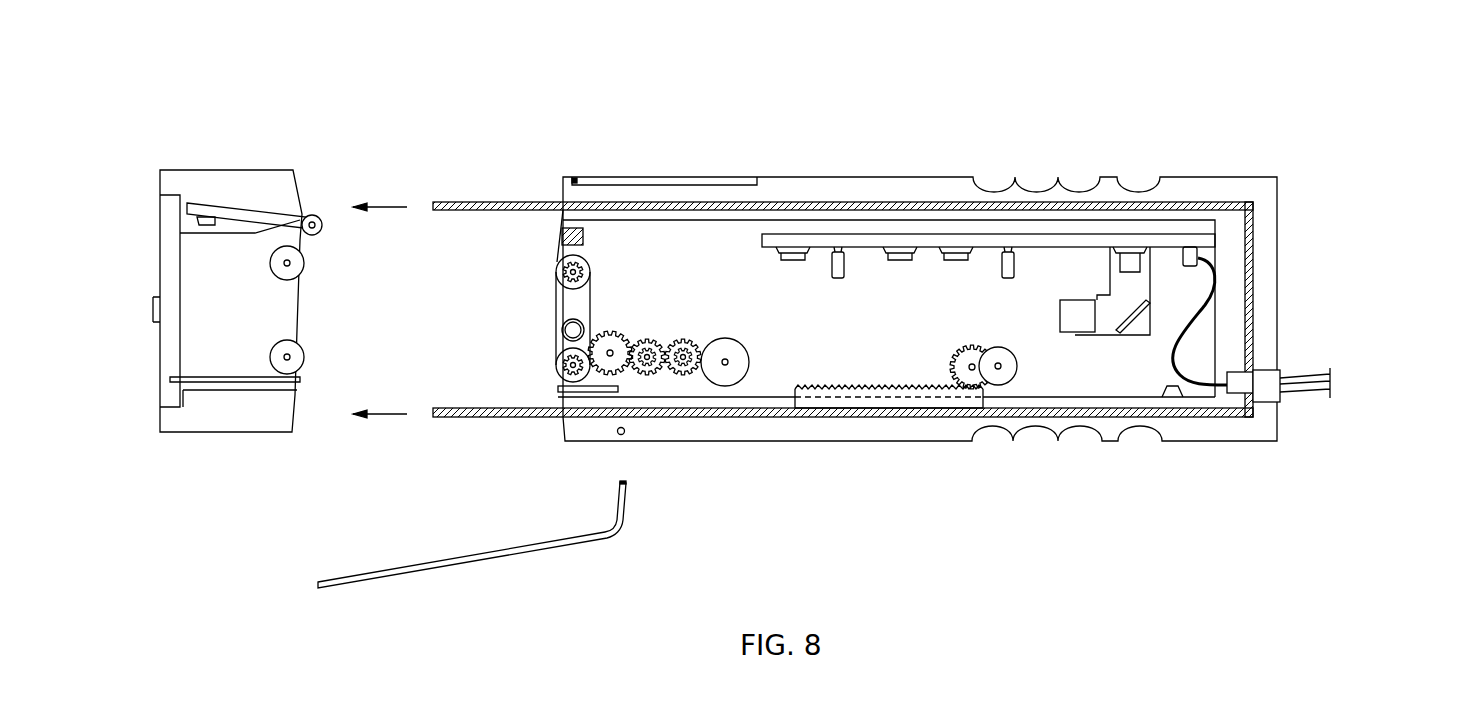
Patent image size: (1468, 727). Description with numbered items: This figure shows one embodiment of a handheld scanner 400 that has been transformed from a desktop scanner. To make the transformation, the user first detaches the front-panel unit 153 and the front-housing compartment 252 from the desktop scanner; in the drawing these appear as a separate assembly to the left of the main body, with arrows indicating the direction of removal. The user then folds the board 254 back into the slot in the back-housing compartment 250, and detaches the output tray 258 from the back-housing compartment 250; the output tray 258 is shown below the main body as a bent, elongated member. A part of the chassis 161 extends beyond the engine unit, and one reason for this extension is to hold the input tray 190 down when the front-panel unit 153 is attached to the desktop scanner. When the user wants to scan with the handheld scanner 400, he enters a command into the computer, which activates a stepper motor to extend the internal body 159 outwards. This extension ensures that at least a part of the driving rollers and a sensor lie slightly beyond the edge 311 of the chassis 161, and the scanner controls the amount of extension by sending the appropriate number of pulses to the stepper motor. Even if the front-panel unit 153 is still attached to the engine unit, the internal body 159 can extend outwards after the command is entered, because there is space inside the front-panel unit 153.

The handheld scanner 400 is at (934, 230).
The back-housing compartment 250 is at (993, 261).
The front-housing compartment 252 is at (230, 289).
The board 254 is at (688, 177).
The output tray 258 is at (625, 498).
The edge 311 is at (911, 239).
The input tray 190 is at (237, 213).
The front-panel unit 153 is at (215, 340).
The chassis 161 is at (1250, 228).
The internal body 159 is at (1215, 285).